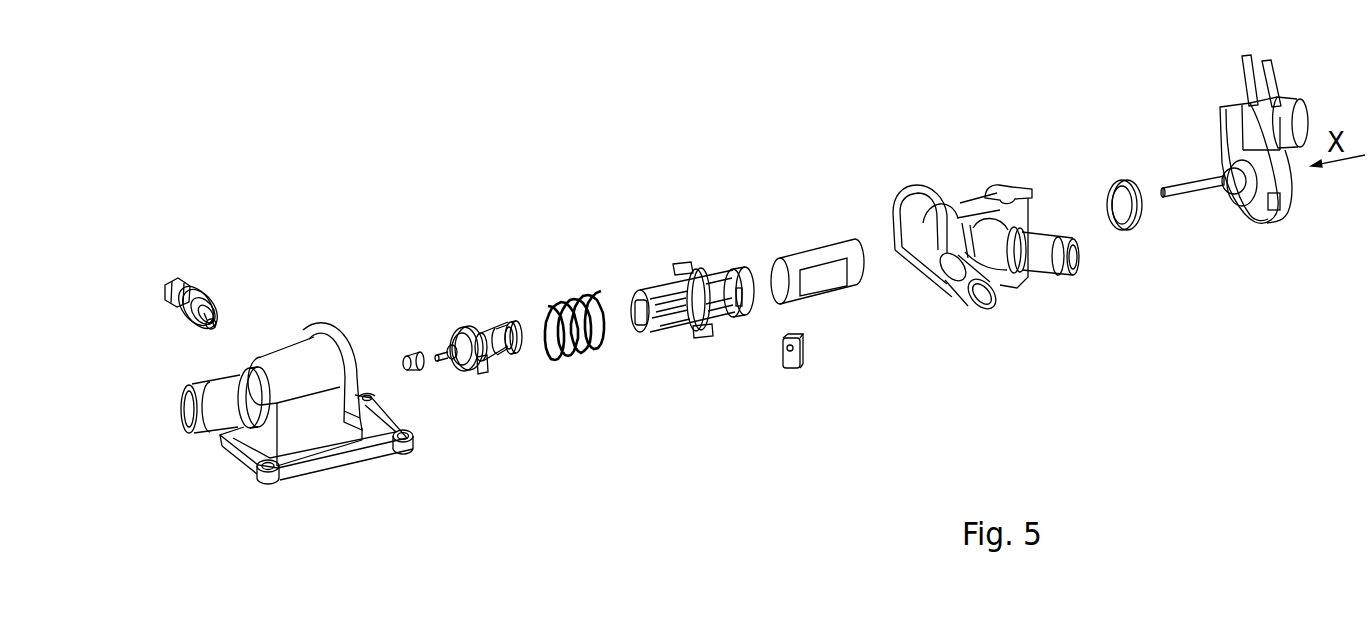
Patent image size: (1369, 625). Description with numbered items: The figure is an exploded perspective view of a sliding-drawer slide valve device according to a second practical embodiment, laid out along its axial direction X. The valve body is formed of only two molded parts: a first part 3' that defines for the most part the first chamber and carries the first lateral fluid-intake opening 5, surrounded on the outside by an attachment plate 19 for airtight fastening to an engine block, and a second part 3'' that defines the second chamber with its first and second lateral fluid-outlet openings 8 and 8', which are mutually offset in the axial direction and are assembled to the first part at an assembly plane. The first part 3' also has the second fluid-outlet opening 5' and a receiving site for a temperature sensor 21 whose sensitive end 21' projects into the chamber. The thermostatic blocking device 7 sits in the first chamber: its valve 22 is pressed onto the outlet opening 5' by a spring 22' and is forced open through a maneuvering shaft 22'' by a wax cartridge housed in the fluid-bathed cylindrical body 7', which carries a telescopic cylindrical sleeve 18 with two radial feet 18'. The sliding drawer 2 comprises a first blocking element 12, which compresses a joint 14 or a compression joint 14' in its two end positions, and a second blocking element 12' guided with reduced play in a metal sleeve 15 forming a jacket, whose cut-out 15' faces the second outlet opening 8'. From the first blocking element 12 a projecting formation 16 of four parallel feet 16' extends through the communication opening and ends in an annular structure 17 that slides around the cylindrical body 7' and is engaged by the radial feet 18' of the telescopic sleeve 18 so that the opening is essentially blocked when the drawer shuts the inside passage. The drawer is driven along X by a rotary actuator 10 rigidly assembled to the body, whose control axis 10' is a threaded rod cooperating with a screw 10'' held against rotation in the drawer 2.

The sliding drawer 2 is at (715, 353).
The first part of the valve body 3' is at (319, 336).
The second part of the valve body 3'' is at (962, 213).
The first lateral fluid-intake opening 5 is at (305, 450).
The second fluid-outlet opening 5' is at (199, 413).
The thermostatic blocking device 7 is at (490, 309).
The cylindrical body 7' is at (490, 380).
The first lateral fluid-outlet opening 8 is at (971, 311).
The second lateral fluid-outlet opening 8' is at (1073, 260).
The actuator 10 is at (1264, 169).
The control axis 10' is at (1203, 212).
The screw 10'' is at (810, 384).
The first blocking element 12 is at (694, 263).
The second blocking element 12' is at (746, 262).
The joint 14 is at (684, 358).
The compression joint 14' is at (738, 321).
The sleeve 15 is at (843, 316).
The cut-out 15' is at (825, 306).
The projecting formation 16 is at (663, 274).
The feet 16' is at (663, 272).
The annular structure 17 is at (642, 332).
The telescopic cylindrical sleeve 18 is at (510, 309).
The radial feet 18' is at (530, 375).
The attachment plate 19 is at (368, 460).
The temperature sensor 21 is at (182, 274).
The sensitive end 21' is at (242, 304).
The valve 22 is at (462, 288).
The spring 22' is at (585, 372).
The maneuvering shaft 22'' is at (430, 319).